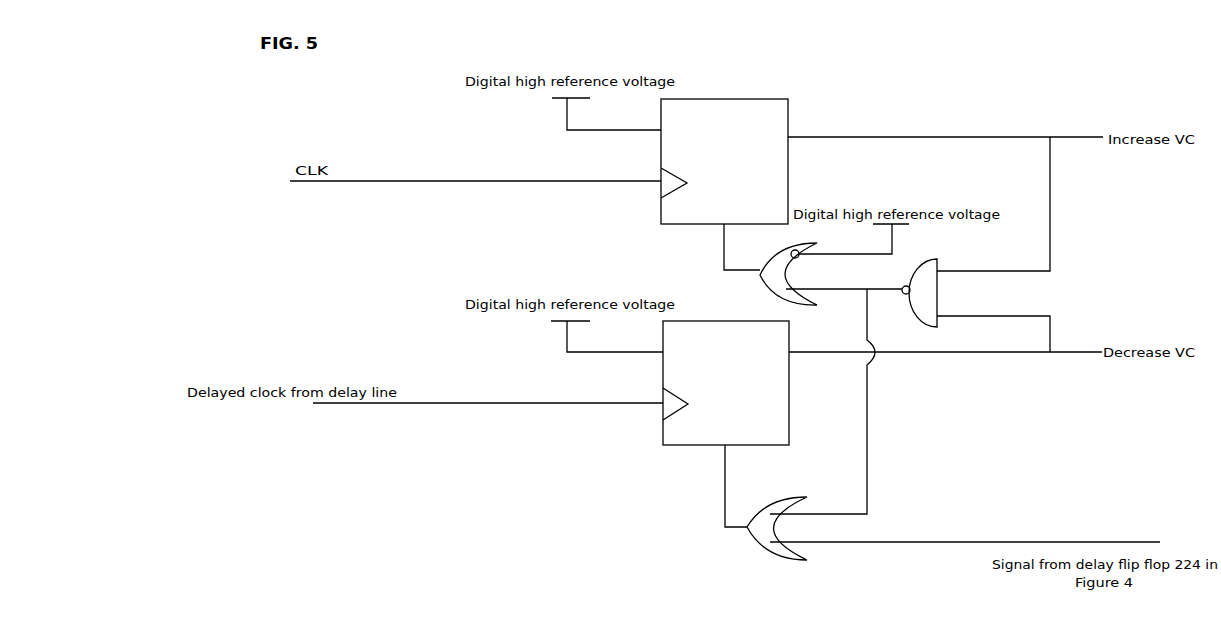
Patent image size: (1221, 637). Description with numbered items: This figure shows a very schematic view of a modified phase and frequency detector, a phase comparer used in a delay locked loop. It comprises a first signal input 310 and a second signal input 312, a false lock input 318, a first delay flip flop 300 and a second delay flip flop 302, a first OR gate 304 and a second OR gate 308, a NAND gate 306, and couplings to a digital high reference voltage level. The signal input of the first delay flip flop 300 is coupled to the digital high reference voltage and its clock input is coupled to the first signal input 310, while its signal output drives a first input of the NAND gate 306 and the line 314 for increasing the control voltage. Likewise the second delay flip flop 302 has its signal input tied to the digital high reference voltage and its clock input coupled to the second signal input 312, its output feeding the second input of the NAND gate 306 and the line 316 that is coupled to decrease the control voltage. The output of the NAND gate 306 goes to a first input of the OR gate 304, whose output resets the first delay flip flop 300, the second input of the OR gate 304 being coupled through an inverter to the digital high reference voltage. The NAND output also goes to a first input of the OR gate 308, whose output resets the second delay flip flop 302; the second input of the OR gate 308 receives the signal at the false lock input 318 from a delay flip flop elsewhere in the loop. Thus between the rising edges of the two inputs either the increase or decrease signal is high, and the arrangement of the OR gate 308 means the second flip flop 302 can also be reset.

The first delay flip flop 300 is at (724, 161).
The second delay flip flop 302 is at (726, 383).
The first OR gate 304 is at (813, 264).
The NAND gate 306 is at (935, 293).
The second OR gate 308 is at (800, 424).
The first signal input 310 is at (475, 164).
The second signal input 312 is at (488, 390).
The line for increasing the control voltage 314 is at (945, 189).
The line for decreasing the control voltage 316 is at (945, 334).
The false lock input 318 is at (965, 527).